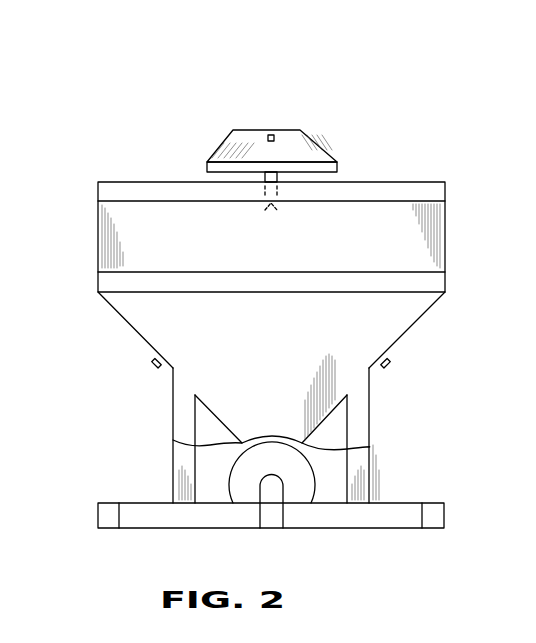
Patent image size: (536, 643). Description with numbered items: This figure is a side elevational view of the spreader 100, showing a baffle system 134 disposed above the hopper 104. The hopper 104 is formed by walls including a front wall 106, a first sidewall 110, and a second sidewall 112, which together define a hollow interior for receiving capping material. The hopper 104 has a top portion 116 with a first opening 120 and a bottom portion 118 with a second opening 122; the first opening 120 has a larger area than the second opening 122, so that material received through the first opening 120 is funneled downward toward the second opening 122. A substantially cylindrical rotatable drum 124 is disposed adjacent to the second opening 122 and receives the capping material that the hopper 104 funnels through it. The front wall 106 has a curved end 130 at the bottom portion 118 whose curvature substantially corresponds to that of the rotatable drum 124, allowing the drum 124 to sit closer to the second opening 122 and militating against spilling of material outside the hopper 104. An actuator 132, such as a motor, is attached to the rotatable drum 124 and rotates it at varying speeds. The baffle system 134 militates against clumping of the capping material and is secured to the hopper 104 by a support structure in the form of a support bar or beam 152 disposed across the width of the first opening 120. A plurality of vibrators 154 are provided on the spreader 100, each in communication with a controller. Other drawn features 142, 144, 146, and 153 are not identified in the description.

The spreader 100 is at (139, 115).
The hopper 104 is at (430, 201).
The front wall 106 is at (430, 256).
The first sidewall 110 is at (396, 346).
The second sidewall 112 is at (132, 327).
The top portion 116 is at (82, 217).
The bottom portion 118 is at (430, 426).
The first opening 120 is at (178, 182).
The second opening 122 is at (369, 447).
The rotatable drum 124 is at (238, 490).
The curved end 130 is at (174, 441).
The actuator 132 is at (275, 513).
The baffle system 134 is at (292, 101).
The knob 142 is at (300, 130).
The flange 144 is at (337, 165).
The indicator 146 is at (258, 130).
The support bar or beam 152 is at (262, 208).
The shaft 153 is at (280, 182).
The vibrators 154 is at (157, 367).